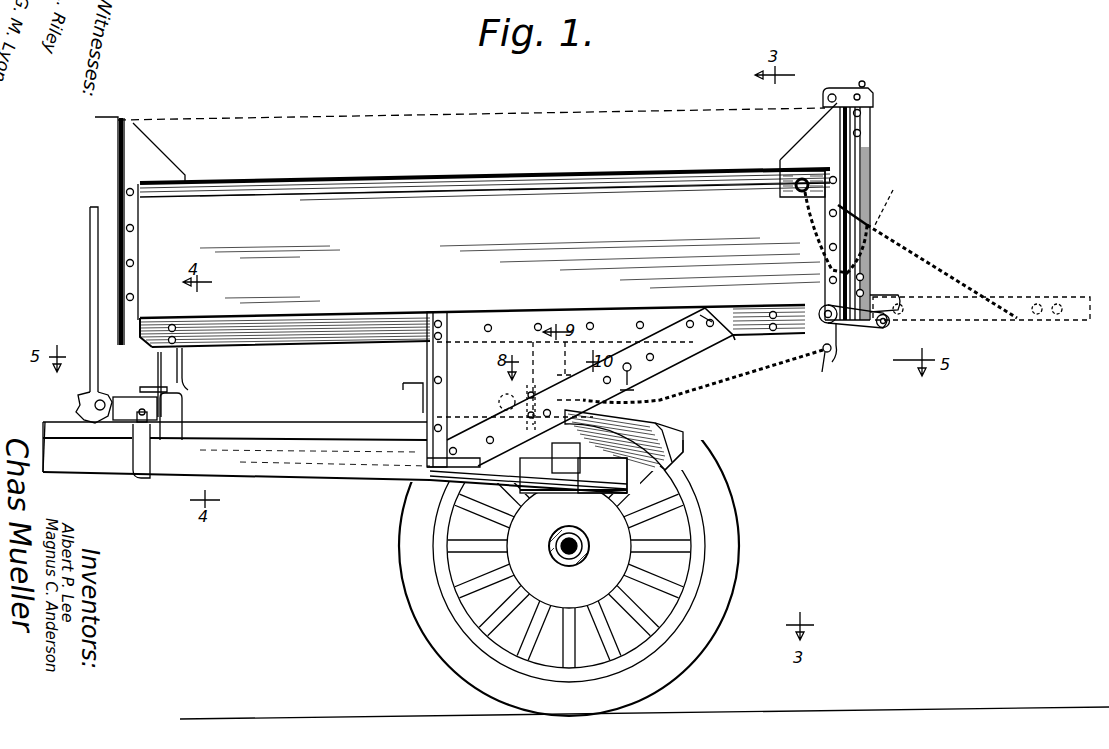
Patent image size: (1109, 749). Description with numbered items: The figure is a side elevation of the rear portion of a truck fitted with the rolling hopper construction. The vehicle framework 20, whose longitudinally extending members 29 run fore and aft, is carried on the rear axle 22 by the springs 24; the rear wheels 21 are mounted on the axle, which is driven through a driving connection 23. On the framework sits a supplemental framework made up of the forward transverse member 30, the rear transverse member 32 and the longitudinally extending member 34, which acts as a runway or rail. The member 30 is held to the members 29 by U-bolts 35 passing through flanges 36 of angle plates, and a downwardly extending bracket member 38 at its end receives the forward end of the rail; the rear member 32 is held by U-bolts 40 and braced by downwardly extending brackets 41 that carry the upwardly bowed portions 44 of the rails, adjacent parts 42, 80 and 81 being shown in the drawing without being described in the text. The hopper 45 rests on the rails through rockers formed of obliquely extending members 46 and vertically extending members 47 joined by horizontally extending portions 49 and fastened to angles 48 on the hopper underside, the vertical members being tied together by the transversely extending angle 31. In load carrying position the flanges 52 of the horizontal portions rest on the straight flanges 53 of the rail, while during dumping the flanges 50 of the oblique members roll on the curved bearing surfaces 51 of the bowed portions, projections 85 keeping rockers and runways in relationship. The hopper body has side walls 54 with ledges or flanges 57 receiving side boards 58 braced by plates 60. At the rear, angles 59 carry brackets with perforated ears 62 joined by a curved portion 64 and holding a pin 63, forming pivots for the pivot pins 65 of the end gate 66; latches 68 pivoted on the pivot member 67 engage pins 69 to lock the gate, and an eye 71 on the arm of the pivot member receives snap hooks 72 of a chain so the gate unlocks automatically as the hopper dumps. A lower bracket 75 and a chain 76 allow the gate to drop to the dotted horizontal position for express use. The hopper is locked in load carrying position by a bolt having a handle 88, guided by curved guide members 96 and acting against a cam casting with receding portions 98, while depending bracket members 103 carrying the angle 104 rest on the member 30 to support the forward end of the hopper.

The framework 20 is at (265, 424).
The rear wheels 21 is at (738, 522).
The rear axle 22 is at (576, 560).
The driving connection 23 is at (602, 494).
The springs 24 is at (512, 484).
The longitudinally extending members 29 is at (99, 466).
The transverse member 30 is at (160, 400).
The transversely extending angle 31 is at (420, 388).
The rear transverse member 32 is at (526, 405).
The longitudinally extending member 34 is at (265, 474).
The U-bolts 35 is at (140, 470).
The flanges 36 is at (136, 422).
The bracket member 38 is at (184, 412).
The U-bolts 40 is at (499, 404).
The brackets 41 is at (504, 366).
The bearing base 42 is at (522, 466).
The upwardly bowed portions 44 is at (624, 435).
The hopper 45 is at (538, 181).
The obliquely extending members 46 is at (660, 340).
The vertically extending members 47 is at (426, 354).
The angles 48 is at (385, 324).
The horizontally extending portions 49 is at (426, 452).
The flanges 50 is at (706, 318).
The curved bearing surfaces 51 is at (563, 474).
The flanges 52 is at (440, 478).
The straight flanges 53 is at (455, 483).
The side walls 54 is at (385, 196).
The ledges or flanges 57 is at (446, 186).
The side boards 58 is at (258, 126).
The angles 59 is at (836, 177).
The plates 60 is at (140, 135).
The ears 62 is at (873, 96).
The pin 63 is at (863, 82).
The curved portion 64 is at (832, 92).
The pivot pins 65 is at (856, 93).
The end gate 66 is at (980, 312).
The pivot member 67 is at (822, 321).
The latches 68 is at (880, 328).
The pins 69 is at (878, 302).
The eye 71 is at (838, 358).
The snap hooks 72 is at (824, 356).
The bracket 75 is at (869, 290).
The chain 76 is at (870, 196).
The brake lever 80 is at (668, 432).
The brake hook 81 is at (686, 444).
The projections 85 is at (628, 392).
The handle 88 is at (90, 264).
The curved guide members 96 is at (175, 390).
The receding portions 98 is at (80, 400).
The depending bracket members 103 is at (183, 368).
The angle 104 is at (155, 387).